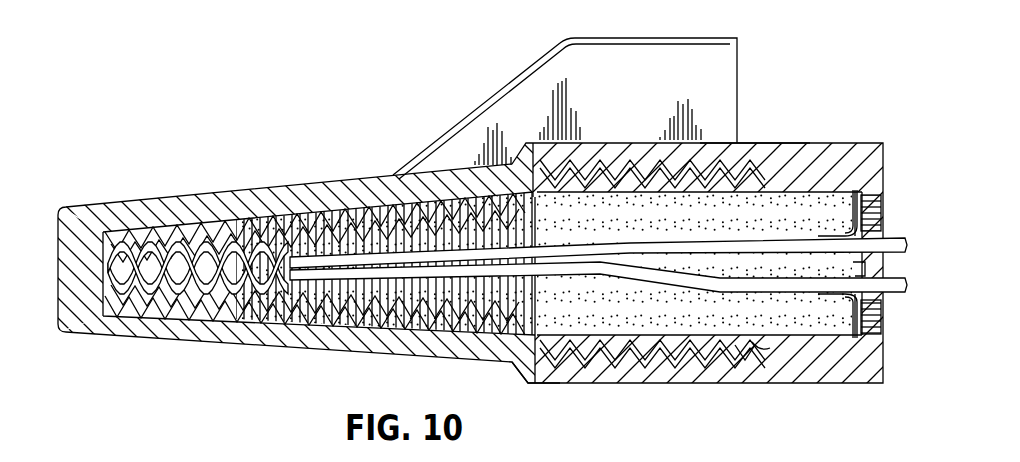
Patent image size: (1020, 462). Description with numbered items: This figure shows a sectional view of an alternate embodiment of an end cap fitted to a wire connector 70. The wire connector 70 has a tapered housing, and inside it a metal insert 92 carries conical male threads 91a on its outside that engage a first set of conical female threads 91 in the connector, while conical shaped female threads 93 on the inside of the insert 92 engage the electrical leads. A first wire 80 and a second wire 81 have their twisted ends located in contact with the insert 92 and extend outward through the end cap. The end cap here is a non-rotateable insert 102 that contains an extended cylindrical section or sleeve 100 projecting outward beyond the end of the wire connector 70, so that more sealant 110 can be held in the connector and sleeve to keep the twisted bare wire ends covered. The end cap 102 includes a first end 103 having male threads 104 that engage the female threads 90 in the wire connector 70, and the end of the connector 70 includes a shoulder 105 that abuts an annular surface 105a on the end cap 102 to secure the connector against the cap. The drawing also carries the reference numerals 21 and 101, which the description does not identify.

The wire connector 70 is at (128, 158).
The conical shaped female threads 93 is at (287, 207).
The metal insert 92 is at (342, 193).
The conical male threads 91a is at (385, 200).
The first set of conical female threads 91 is at (447, 193).
The female threads 90 is at (542, 172).
The connector housing block 21 is at (634, 102).
The non-rotateable insert 102 is at (758, 141).
The extended cylindrical section or sleeve 100 is at (783, 152).
The contact pin 101 is at (847, 188).
The first wire 80 is at (905, 238).
The second wire 81 is at (893, 293).
The sealant 110 is at (598, 319).
The first end 103 is at (557, 383).
The male threads 104 is at (650, 367).
The shoulder 105 is at (740, 362).
The annular surface 105a is at (740, 362).